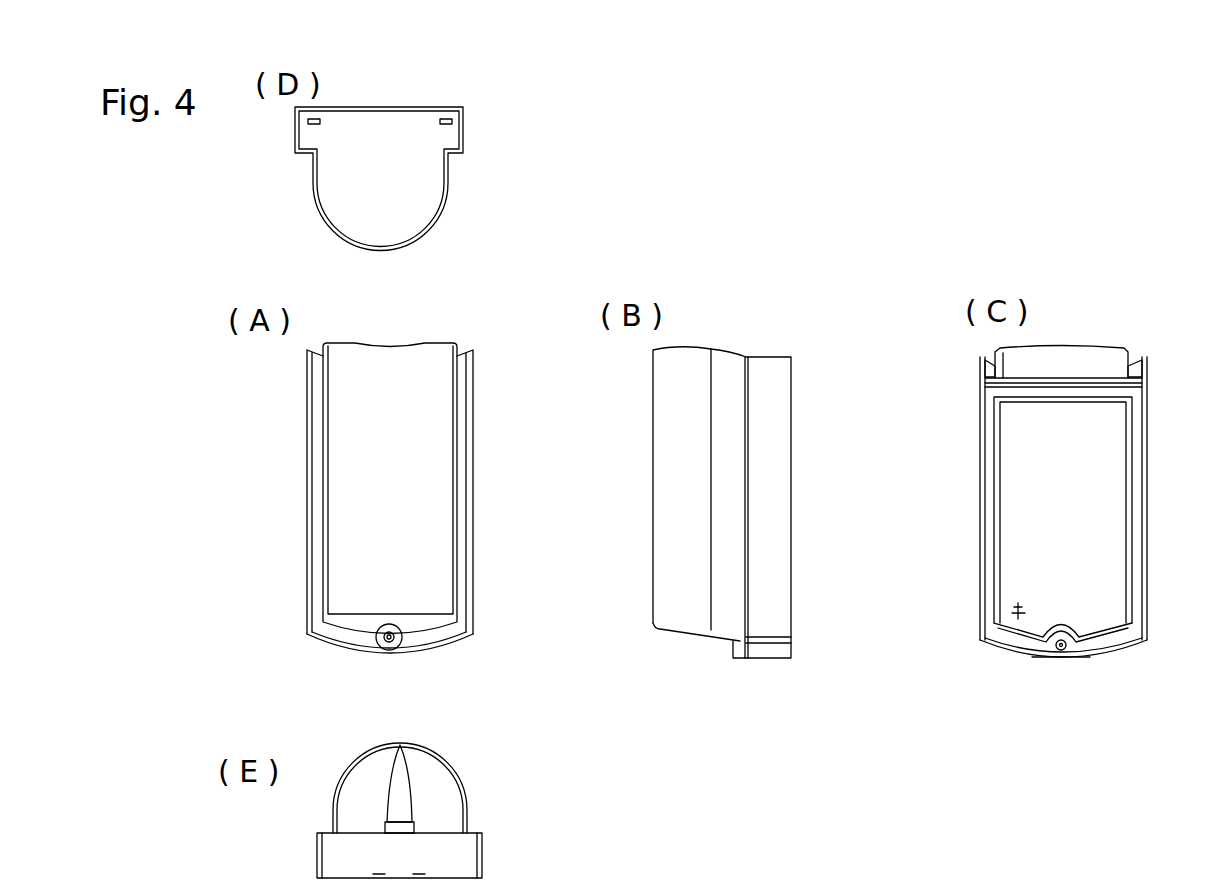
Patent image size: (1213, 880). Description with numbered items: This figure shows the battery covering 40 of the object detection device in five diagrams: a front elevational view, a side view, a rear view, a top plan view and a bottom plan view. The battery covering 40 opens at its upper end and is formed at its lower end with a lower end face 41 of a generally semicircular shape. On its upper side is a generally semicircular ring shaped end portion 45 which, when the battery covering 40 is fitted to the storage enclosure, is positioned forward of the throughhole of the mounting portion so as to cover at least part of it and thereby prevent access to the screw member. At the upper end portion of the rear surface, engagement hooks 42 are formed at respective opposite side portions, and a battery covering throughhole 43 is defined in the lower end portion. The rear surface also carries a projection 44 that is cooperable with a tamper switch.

The battery covering 40 is at (310, 195).
The lower end face 41 is at (350, 627).
The engagement hook 42 is at (983, 368).
The battery covering throughhole 43 is at (390, 651).
The projection 44 is at (1012, 603).
The generally semicircular ring shaped end portion 45 is at (434, 214).